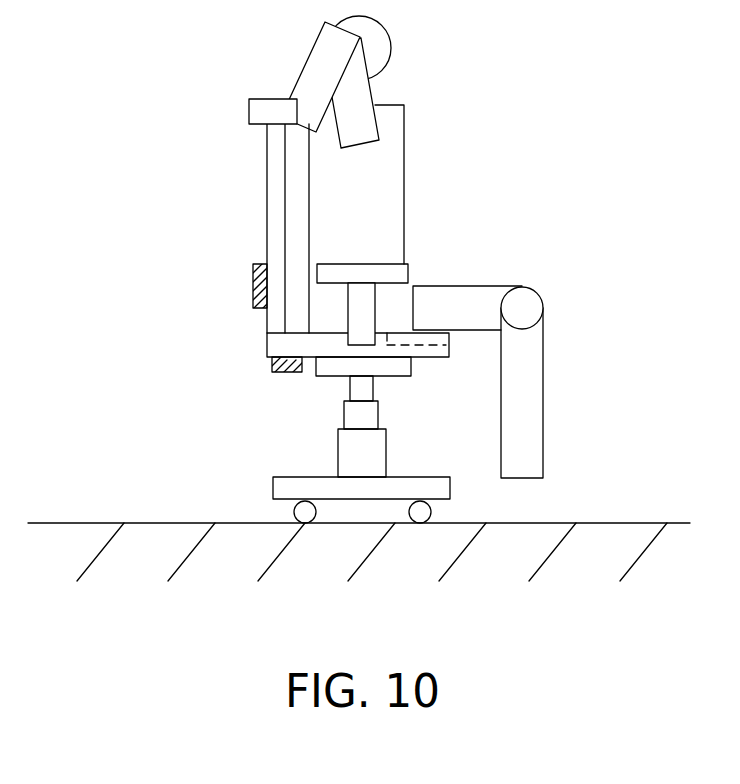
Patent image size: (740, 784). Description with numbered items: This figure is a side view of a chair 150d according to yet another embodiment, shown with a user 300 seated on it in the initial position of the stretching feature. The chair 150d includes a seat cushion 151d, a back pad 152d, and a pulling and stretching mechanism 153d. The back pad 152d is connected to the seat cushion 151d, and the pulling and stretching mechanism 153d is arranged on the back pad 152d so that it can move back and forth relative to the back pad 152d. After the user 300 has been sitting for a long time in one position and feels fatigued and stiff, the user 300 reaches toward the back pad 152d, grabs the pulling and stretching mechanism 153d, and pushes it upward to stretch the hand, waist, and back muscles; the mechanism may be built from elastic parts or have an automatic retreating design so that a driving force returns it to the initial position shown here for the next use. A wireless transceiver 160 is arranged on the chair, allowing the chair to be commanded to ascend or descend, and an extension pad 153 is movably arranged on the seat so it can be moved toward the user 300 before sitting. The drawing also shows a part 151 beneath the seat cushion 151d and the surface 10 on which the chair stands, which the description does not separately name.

The ground 10 is at (222, 532).
The chair 150d is at (286, 305).
The base slide block 151 is at (273, 363).
The seat cushion 151d is at (272, 348).
The back pad 152d is at (272, 243).
The extension pad 153 is at (433, 350).
The pulling and stretching mechanism 153d is at (250, 113).
The wireless transceiver 160 is at (253, 290).
The user 300 is at (399, 194).